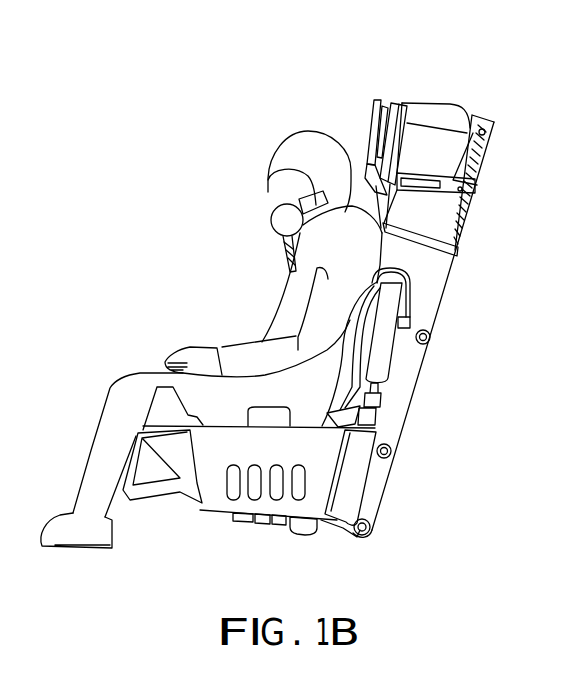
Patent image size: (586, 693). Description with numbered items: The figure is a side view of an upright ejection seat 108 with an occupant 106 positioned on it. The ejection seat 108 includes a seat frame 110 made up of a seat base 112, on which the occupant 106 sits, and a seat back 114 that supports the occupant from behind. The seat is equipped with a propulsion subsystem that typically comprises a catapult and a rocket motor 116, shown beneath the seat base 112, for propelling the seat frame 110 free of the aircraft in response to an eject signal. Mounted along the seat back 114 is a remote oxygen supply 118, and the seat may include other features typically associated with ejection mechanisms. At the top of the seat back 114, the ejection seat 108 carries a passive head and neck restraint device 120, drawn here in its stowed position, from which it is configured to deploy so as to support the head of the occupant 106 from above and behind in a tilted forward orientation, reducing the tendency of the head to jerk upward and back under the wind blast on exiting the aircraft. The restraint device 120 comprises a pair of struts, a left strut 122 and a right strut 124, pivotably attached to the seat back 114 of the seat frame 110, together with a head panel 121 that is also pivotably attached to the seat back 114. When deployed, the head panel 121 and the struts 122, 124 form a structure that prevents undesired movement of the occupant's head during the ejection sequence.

The occupant 106 is at (115, 392).
The ejection seat 108 is at (437, 280).
The seat frame 110 is at (400, 413).
The seat base 112 is at (212, 490).
The seat back 114 is at (435, 300).
The rocket motor 116 is at (303, 537).
The remote oxygen supply 118 is at (378, 357).
The passive head and neck restraint device 120 is at (395, 98).
The head panel 121 is at (390, 110).
The left strut 122 is at (378, 103).
The right strut 124 is at (368, 137).